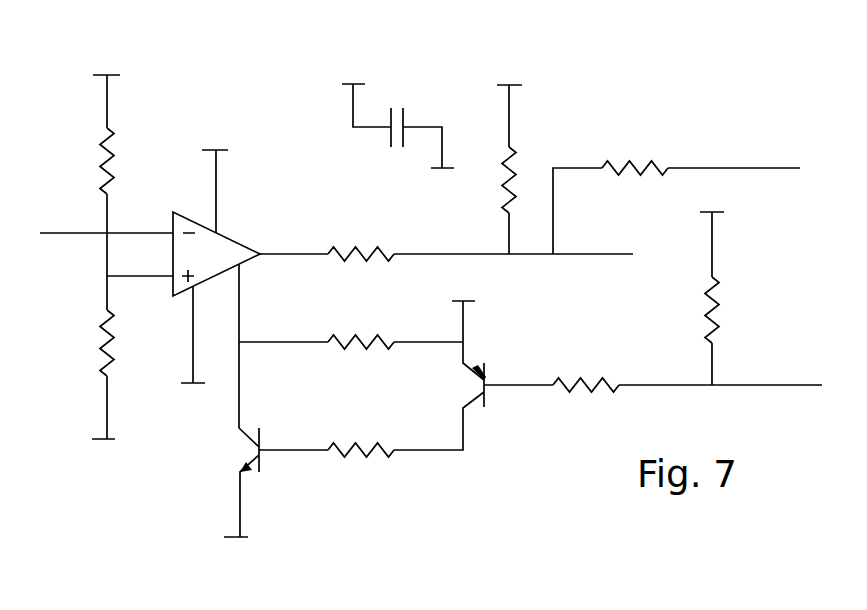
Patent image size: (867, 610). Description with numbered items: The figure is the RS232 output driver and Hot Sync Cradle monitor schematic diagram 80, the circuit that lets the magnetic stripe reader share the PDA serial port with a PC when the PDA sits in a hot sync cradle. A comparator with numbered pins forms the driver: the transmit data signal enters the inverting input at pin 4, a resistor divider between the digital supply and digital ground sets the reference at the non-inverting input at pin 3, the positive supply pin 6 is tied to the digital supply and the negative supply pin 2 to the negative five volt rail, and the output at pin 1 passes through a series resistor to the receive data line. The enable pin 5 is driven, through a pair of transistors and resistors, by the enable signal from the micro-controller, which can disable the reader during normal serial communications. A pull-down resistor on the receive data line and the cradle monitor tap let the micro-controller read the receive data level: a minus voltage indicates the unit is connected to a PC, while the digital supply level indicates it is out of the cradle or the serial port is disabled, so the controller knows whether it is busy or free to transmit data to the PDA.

The RS232 output driver and Hot Sync Cradle monitor schematic diagram 80 is at (634, 92).
The comparator output pin 1 is at (327, 248).
The comparator negative supply pin 2 is at (192, 345).
The comparator non-inverting input pin 3 is at (140, 266).
The comparator inverting input pin 4 is at (106, 223).
The comparator enable pin 5 is at (226, 346).
The comparator positive supply pin 6 is at (216, 182).